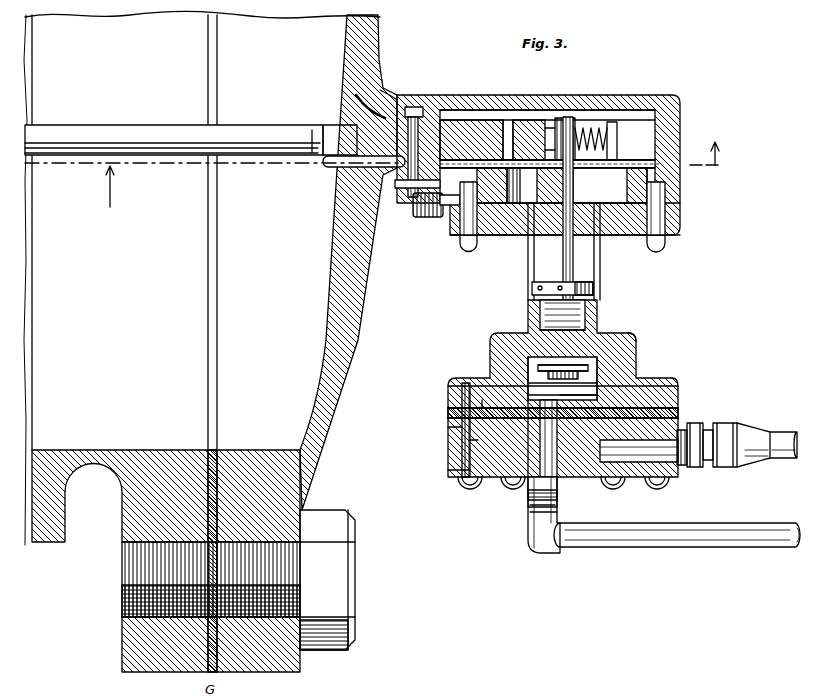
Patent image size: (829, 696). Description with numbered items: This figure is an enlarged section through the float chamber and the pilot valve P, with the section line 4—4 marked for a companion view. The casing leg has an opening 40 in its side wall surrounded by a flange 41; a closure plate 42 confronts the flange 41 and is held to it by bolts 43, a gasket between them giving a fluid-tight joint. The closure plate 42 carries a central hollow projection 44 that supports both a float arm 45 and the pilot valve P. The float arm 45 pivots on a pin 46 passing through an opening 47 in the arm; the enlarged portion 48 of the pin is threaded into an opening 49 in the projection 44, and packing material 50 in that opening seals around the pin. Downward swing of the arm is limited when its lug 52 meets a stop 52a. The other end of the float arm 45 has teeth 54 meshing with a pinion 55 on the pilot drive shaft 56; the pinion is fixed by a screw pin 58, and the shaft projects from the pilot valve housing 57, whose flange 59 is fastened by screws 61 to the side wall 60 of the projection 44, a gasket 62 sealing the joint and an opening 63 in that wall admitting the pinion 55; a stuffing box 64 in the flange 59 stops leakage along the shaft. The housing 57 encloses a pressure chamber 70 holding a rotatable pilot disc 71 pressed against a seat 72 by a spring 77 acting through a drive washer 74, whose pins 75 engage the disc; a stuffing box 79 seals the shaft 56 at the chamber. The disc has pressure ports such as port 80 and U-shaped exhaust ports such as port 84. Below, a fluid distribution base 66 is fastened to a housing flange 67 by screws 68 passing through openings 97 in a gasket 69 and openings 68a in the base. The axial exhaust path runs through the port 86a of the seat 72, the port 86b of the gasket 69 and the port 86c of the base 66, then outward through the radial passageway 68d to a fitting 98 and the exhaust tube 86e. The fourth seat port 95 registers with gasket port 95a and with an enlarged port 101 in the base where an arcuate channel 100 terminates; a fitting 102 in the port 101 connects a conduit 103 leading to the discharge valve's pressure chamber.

The section line 4- 4 is at (373, 174).
The opening 40 is at (133, 450).
The flange 41 is at (122, 652).
The closure plate 42 is at (335, 413).
The bolts 43 is at (331, 520).
The central hollow projection 44 is at (680, 95).
The float arm 45 is at (261, 125).
The pin 46 is at (420, 108).
The opening 47 is at (392, 165).
The enlarged portion 48 is at (418, 216).
The opening 49 is at (395, 185).
The packing material 50 is at (445, 206).
The lug 52 is at (337, 125).
The stop 52a is at (394, 98).
The teeth 54 is at (509, 122).
The pinion 55 is at (598, 126).
The pilot drive shaft 56 is at (574, 274).
The pilot valve housing 57 is at (640, 365).
The screw pin 58 is at (570, 120).
The flange 59 is at (680, 230).
The side wall 60 is at (632, 164).
The screws 61 is at (467, 252).
The gasket 62 is at (680, 205).
The opening 63 is at (627, 183).
The stuffing box 64 is at (531, 242).
The fluid distribution base 66 is at (456, 470).
The flange 67 is at (680, 405).
The screws 68 is at (468, 490).
The openings 68a is at (462, 452).
The bolt 68d is at (652, 488).
The gasket 69 is at (448, 413).
The chamber 70 is at (532, 383).
The pilot disc 71 is at (530, 395).
The seat 72 is at (470, 404).
The drive washer 74 is at (600, 392).
The pins 75 is at (540, 352).
The spring 77 is at (636, 340).
The stuffing box 79 is at (532, 290).
The pressure port 80 is at (620, 398).
The exhaust port 84 is at (530, 376).
The axial port 86a is at (615, 445).
The axial port 86b is at (583, 440).
The axial port 86c is at (557, 458).
The exhaust tube 86e is at (786, 432).
The fourth port 95 is at (500, 400).
The port 95a is at (472, 480).
The openings 97 is at (448, 428).
The fitting 98 is at (700, 465).
The arcuate channel 100 is at (498, 470).
The enlarged port 101 is at (532, 475).
The fitting 102 is at (531, 555).
The conduit 103 is at (694, 540).
The pilot valve P is at (613, 326).